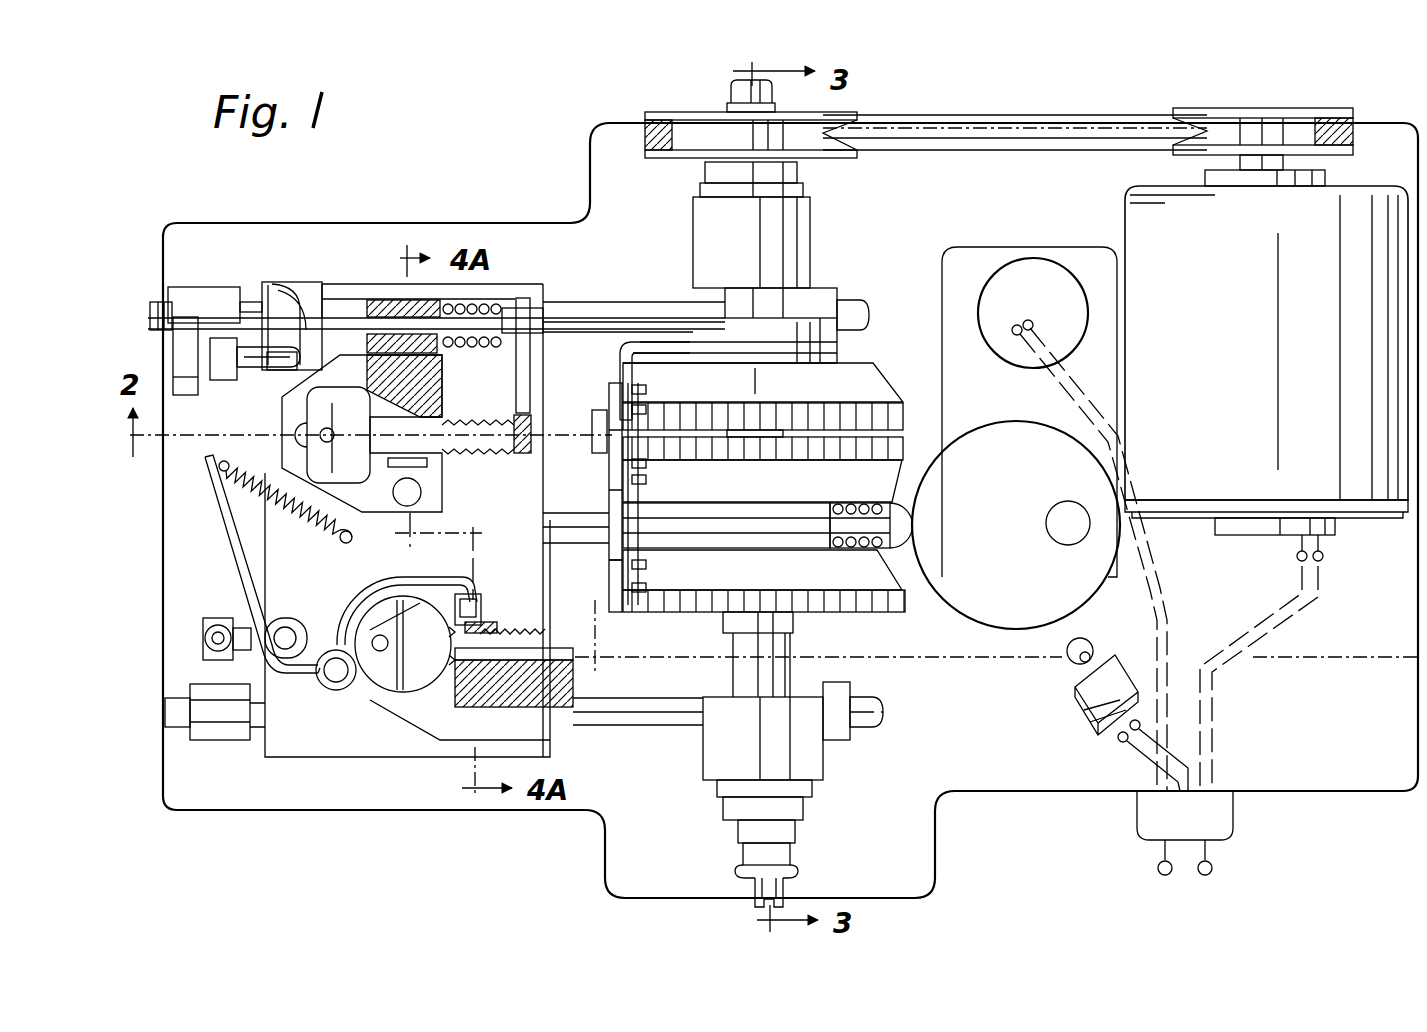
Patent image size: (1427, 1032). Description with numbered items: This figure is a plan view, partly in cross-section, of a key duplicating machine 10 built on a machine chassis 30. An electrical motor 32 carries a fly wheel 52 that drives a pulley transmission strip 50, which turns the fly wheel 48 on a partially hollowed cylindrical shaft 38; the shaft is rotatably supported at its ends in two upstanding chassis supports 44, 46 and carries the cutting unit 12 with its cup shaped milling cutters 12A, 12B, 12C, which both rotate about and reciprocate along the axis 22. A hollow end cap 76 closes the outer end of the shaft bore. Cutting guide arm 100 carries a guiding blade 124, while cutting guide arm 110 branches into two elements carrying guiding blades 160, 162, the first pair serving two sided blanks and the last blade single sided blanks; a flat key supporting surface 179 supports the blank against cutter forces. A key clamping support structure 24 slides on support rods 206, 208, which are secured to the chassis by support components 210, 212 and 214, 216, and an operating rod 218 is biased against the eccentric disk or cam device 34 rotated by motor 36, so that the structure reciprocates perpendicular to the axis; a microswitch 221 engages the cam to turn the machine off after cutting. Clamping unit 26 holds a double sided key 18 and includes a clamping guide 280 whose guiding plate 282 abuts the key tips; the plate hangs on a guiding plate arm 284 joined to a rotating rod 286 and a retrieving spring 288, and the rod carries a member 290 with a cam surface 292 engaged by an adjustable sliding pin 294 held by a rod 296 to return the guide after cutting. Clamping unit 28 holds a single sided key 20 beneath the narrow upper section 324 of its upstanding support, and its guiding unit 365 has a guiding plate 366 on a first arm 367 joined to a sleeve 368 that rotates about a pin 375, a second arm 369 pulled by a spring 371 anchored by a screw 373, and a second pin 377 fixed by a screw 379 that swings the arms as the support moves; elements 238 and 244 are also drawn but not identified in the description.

The key duplicating machine 10 is at (790, 480).
The cutting unit 12 is at (796, 343).
The cup shaped milling cutter 12A is at (875, 384).
The cup shaped milling cutter 12B is at (878, 478).
The cup shaped milling cutter 12C is at (884, 578).
The double sided key 18 is at (393, 428).
The single sided key 20 is at (410, 690).
The axis 22 is at (750, 66).
The key clamping support structure 24 is at (372, 268).
The key clamping unit 26 is at (437, 500).
The clamping unit 28 is at (340, 703).
The machine chassis 30 is at (1027, 790).
The electrical motor 32 is at (1368, 518).
The eccentric disk or cam device 34 is at (985, 615).
The motor 36 is at (1020, 268).
The partially hollowed cylindrical shaft 38 is at (740, 668).
The upstanding chassis support 44 is at (707, 247).
The upstanding chassis support 46 is at (720, 765).
The fly wheel 48 is at (826, 160).
The pulley transmission strip 50 is at (1035, 127).
The fly wheel 52 is at (1270, 110).
The hollow end cap 76 is at (785, 858).
The cutting guide arm 100 is at (647, 347).
The cutting guide arm 110 is at (637, 527).
The guiding blade 124 is at (606, 377).
The guiding blade 160 is at (605, 480).
The guiding blade 162 is at (606, 580).
The flat key supporting surface 179 is at (598, 411).
The support rod 206 is at (642, 727).
The support rod 208 is at (553, 312).
The support component 210 is at (215, 740).
The support component 212 is at (840, 725).
The support component 214 is at (187, 287).
The support component 216 is at (825, 298).
The operating rod 218 is at (606, 538).
The microswitch 221 is at (1090, 697).
The bushing 238 is at (430, 376).
The slot 244 is at (427, 462).
The clamping guide 280 is at (558, 413).
The guiding plate 282 is at (522, 455).
The guiding plate arm 284 is at (522, 378).
The rotating rod 286 is at (385, 315).
The retrieving spring 288 is at (480, 300).
The member 290 is at (300, 290).
The cam surface 292 is at (275, 282).
The adjustable sliding pin 294 is at (283, 367).
The rod 296 is at (218, 380).
The narrow upper section 324 is at (520, 690).
The guiding unit 365 is at (247, 601).
The guiding plate 366 is at (481, 612).
The first arm 367 is at (344, 605).
The sleeve 368 is at (325, 686).
The second arm 369 is at (218, 505).
The spring 371 is at (295, 520).
The screw 373 is at (340, 545).
The pin 375 is at (337, 673).
The second pin 377 is at (300, 614).
The screw 379 is at (216, 625).